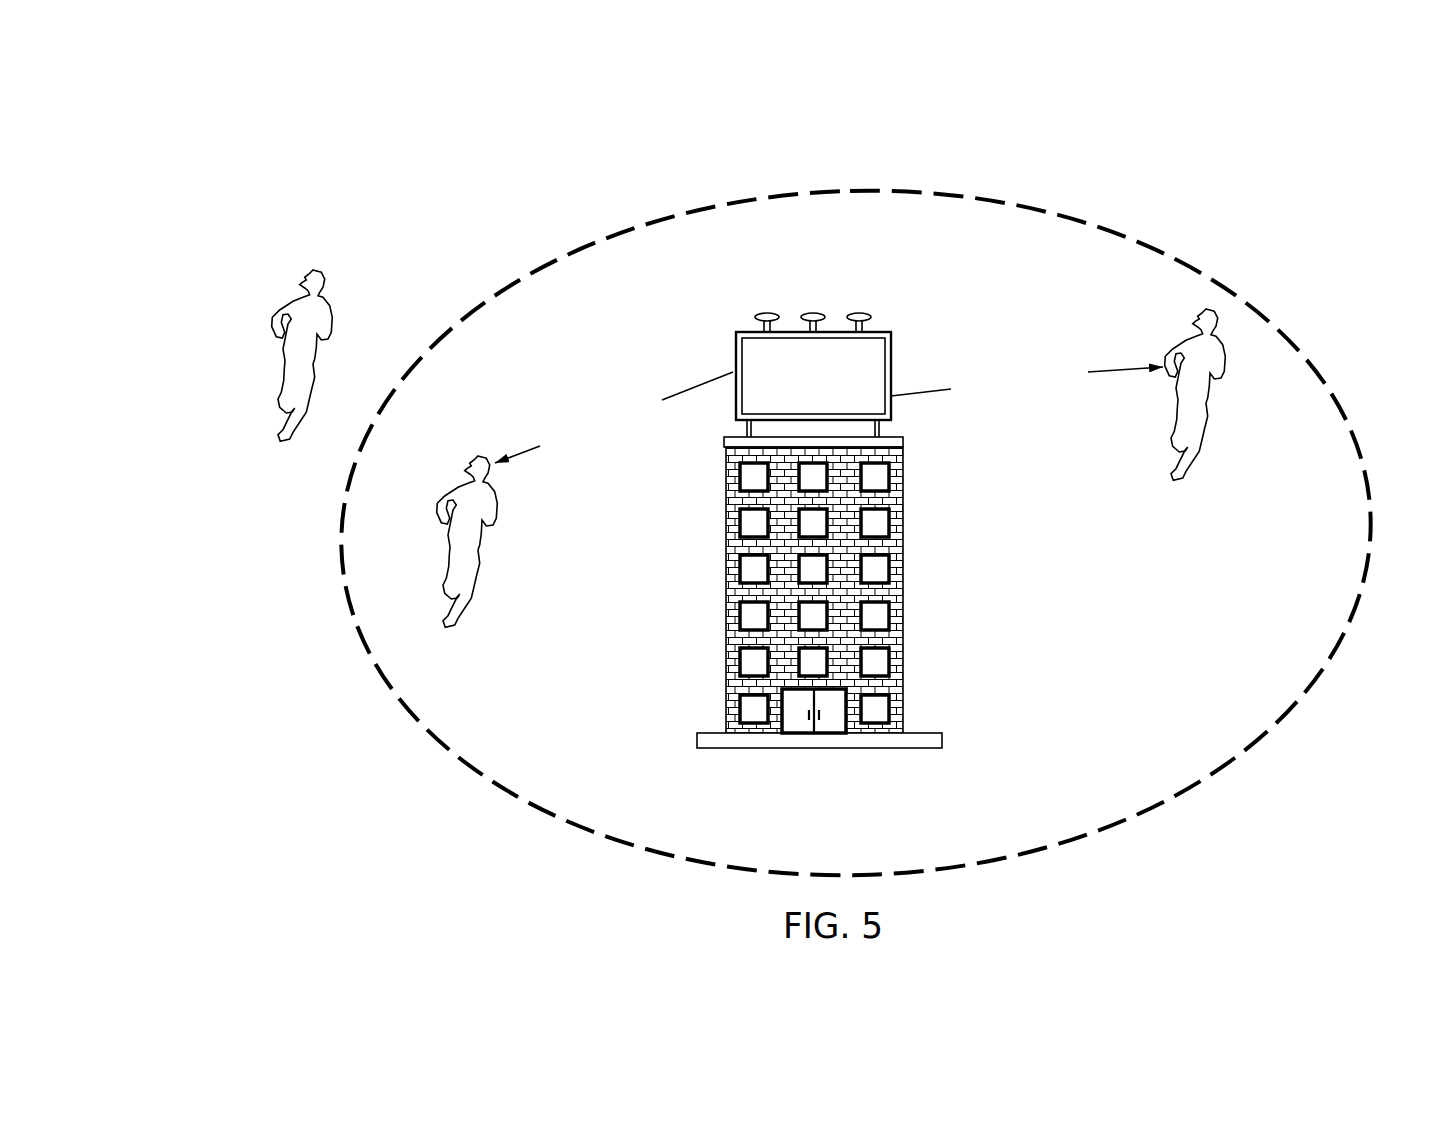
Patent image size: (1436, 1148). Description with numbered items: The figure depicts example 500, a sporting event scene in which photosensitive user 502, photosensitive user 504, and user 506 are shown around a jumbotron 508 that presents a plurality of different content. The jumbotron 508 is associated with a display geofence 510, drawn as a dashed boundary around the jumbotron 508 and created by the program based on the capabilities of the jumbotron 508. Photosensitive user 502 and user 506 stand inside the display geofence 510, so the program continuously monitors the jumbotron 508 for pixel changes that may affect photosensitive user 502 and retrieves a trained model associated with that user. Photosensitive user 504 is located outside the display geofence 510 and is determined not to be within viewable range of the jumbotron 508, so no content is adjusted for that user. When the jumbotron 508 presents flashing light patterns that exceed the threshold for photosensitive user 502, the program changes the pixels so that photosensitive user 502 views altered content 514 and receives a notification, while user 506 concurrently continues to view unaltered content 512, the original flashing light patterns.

The example 500 is at (322, 102).
The photosensitive user 502 is at (465, 597).
The photosensitive user 504 is at (313, 270).
The user 506 is at (1182, 482).
The jumbotron 508 is at (882, 332).
The display geofence 510 is at (1105, 226).
The unaltered content 512 is at (1018, 358).
The altered content 514 is at (606, 392).